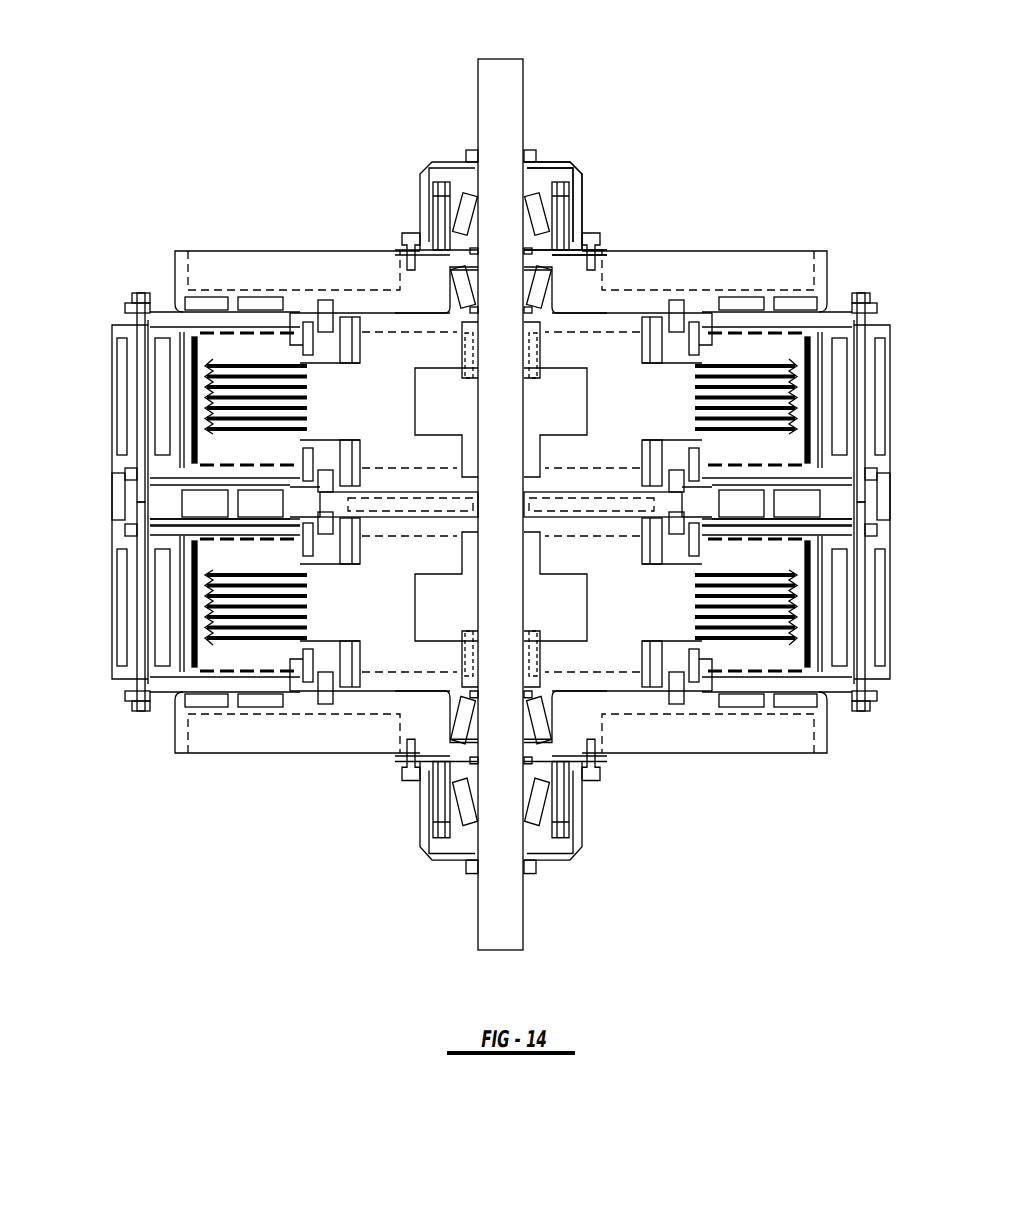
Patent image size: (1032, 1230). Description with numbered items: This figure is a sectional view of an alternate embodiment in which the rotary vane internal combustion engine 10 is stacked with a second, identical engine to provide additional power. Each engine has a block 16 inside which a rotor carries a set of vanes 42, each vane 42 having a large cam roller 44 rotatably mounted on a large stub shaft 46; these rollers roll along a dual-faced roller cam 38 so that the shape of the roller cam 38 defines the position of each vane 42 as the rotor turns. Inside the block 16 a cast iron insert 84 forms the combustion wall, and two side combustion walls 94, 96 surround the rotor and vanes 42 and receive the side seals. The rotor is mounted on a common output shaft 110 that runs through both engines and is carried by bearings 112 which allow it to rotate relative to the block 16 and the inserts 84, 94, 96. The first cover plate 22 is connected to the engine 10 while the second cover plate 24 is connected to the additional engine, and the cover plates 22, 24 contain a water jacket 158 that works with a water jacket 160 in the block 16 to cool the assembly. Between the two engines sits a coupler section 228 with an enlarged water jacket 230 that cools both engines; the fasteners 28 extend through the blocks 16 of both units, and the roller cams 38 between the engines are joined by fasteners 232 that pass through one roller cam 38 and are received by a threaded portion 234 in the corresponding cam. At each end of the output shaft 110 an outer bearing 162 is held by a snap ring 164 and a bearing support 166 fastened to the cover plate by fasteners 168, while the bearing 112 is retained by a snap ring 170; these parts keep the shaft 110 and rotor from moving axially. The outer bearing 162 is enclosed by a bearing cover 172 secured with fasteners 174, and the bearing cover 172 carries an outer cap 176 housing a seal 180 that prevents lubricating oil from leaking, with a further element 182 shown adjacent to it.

The internal combustion engine 10 is at (278, 128).
The block 16 is at (120, 325).
The first cover plate 22 is at (290, 262).
The second cover plate 24 is at (265, 735).
The fasteners 28 is at (140, 293).
The roller cam 38 is at (325, 312).
The vanes 42 is at (730, 362).
The large cam roller 44 is at (646, 315).
The large stub shaft 46 is at (698, 325).
The cast iron insert 84 is at (190, 340).
The side combustion wall 94 is at (222, 330).
The side combustion wall 96 is at (826, 485).
The output shaft 110 is at (520, 95).
The bearings 112 is at (455, 285).
The water jacket 158 is at (740, 300).
The water jacket 160 is at (868, 395).
The outer bearing 162 is at (585, 210).
The snap ring 164 is at (550, 825).
The bearing support 166 is at (432, 215).
The fasteners 168 is at (440, 200).
The snap ring 170 is at (545, 300).
The bearing cover 172 is at (570, 162).
The fasteners 174 is at (603, 240).
The outer cap 176 is at (470, 150).
The seal 180 is at (545, 160).
The bearing race 182 is at (540, 185).
The coupler section 228 is at (113, 503).
The enlarged water jacket 230 is at (195, 510).
The fasteners 232 is at (320, 510).
The threaded portion 234 is at (655, 520).